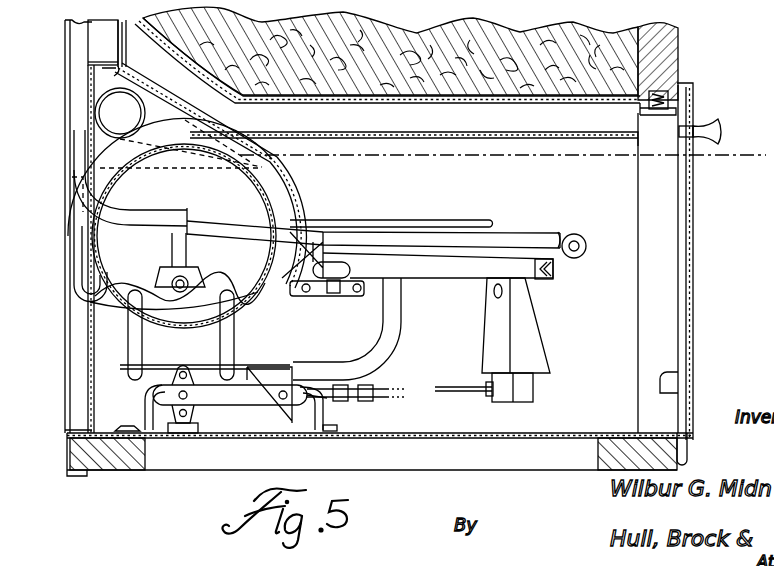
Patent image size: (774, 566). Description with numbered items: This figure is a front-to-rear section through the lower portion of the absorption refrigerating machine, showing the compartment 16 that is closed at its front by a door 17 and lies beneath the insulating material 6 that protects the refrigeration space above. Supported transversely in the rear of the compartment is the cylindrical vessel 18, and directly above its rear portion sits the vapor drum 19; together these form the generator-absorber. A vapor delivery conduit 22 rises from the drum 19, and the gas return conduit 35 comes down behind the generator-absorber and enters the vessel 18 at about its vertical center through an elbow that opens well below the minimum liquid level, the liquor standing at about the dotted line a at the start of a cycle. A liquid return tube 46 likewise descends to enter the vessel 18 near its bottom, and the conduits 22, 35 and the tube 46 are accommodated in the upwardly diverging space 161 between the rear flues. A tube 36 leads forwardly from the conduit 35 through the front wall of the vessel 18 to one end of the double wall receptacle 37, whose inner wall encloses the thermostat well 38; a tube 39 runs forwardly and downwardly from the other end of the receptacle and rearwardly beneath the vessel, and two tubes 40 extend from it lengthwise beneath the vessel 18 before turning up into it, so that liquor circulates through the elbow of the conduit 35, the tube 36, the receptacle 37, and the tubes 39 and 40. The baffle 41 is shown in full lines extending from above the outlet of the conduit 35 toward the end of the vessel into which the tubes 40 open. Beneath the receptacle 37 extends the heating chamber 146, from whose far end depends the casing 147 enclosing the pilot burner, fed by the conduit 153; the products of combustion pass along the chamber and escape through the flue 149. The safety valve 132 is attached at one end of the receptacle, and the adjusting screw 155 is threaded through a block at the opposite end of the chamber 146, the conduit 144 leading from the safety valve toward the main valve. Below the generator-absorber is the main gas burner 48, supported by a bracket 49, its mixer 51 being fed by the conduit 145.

The liquid return tube 46 is at (68, 20).
The vapor delivery conduit 22 is at (102, 27).
The insulating material 6 is at (620, 60).
The vapor drum 19 is at (120, 102).
The gas return conduit 35 is at (161, 214).
The flue 149 is at (264, 158).
The liquid level line a is at (166, 170).
The cylindrical vessel 18 is at (172, 223).
The tube 36 is at (376, 228).
The conduit 144 is at (468, 222).
The double wall receptacle 37 is at (563, 232).
The thermostat well 38 is at (587, 247).
The heating chamber 146 is at (461, 280).
The adjusting screw 155 is at (554, 270).
The door 17 is at (694, 257).
The compartment 16 is at (620, 308).
The baffle 41 is at (165, 275).
The upwardly diverging space 161 is at (76, 338).
The tubes 40 is at (128, 347).
The safety valve 132 is at (306, 300).
The tube 39 is at (398, 313).
The pilot burner casing 147 is at (534, 348).
The conduit 153 is at (473, 398).
The mixer 51 is at (278, 372).
The bracket 49 is at (217, 396).
The gas burner 48 is at (143, 400).
The conduit 145 is at (390, 398).